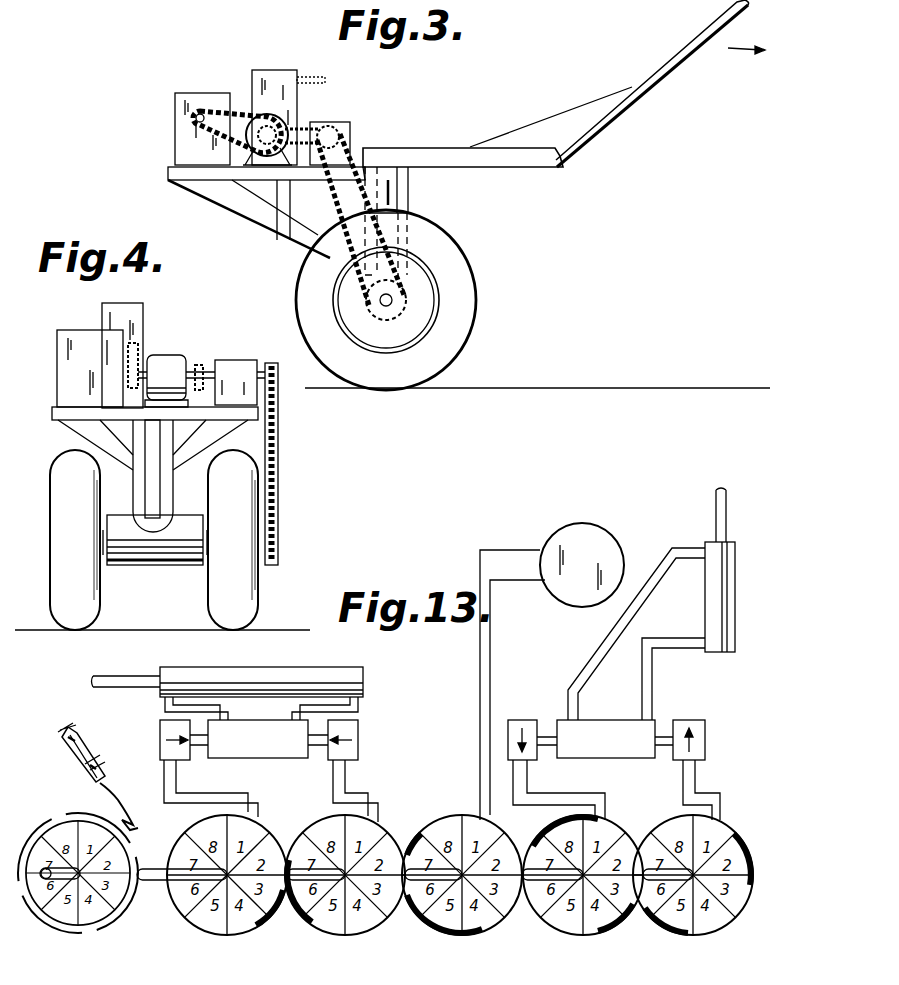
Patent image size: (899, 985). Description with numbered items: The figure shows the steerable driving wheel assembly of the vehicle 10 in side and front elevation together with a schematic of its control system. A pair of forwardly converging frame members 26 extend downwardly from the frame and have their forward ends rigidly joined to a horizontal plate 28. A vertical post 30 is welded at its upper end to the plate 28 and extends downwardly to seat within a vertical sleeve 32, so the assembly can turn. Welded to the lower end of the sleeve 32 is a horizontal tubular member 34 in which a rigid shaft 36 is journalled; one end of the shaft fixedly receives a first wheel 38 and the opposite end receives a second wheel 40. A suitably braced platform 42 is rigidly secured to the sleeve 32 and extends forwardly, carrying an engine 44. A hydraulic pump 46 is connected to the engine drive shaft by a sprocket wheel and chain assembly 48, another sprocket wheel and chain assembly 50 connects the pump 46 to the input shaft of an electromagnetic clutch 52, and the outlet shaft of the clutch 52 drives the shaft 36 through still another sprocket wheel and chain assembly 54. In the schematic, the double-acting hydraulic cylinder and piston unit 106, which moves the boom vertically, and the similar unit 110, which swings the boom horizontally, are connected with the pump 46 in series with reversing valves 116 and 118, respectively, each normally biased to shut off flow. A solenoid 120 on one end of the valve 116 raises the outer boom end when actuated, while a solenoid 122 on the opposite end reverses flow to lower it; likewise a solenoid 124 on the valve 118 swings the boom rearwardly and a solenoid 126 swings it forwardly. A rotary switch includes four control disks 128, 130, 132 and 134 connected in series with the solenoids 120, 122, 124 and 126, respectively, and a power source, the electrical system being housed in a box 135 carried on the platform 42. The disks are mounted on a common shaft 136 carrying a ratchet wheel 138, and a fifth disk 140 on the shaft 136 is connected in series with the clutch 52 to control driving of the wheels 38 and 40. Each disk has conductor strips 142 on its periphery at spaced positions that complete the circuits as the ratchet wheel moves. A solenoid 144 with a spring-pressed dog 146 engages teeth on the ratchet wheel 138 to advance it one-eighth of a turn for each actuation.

In FIG. 3, the transplanter machine 10 is at (652, 103).
In FIG. 4, the transplanter machine 10 is at (288, 437).
In FIG. 3, the frame members 26 is at (673, 50).
In FIG. 3, the horizontal plate 28 is at (460, 157).
In FIG. 3, the vertical post 30 is at (395, 205).
In FIG. 3, the vertical sleeve 32 is at (410, 193).
In FIG. 4, the vertical sleeve 32 is at (137, 475).
In FIG. 4, the horizontal tubular member 34 is at (140, 568).
In FIG. 3, the shaft 36 is at (382, 303).
In FIG. 4, the shaft 36 is at (205, 545).
In FIG. 4, the first wheel 38 is at (82, 616).
In FIG. 3, the second wheel 40 is at (432, 362).
In FIG. 4, the second wheel 40 is at (245, 597).
In FIG. 3, the platform 42 is at (247, 175).
In FIG. 4, the platform 42 is at (80, 415).
In FIG. 3, the engine 44 is at (182, 128).
In FIG. 4, the engine 44 is at (68, 372).
In FIG. 3, the hydraulic pump 46 is at (280, 125).
In FIG. 4, the hydraulic pump 46 is at (168, 358).
In FIG. 3, the sprocket wheel and chain assembly 48 is at (245, 118).
In FIG. 4, the sprocket wheel and chain assembly 48 is at (138, 340).
In FIG. 3, the sprocket wheel and chain assembly 50 is at (300, 132).
In FIG. 4, the sprocket wheel and chain assembly 50 is at (199, 362).
In FIG. 3, the electromagnetic clutch 52 is at (350, 135).
In FIG. 4, the electromagnetic clutch 52 is at (252, 338).
In FIG. 13, the electromagnetic clutch 52 is at (598, 543).
In FIG. 3, the sprocket wheel and chain assembly 54 is at (322, 250).
In FIG. 4, the sprocket wheel and chain assembly 54 is at (279, 470).
In FIG. 13, the double-acting hydraulic cylinder and piston unit 106 is at (738, 590).
In FIG. 13, the double-acting hydraulic cylinder and piston unit 110 is at (268, 668).
In FIG. 13, the reversing valve 116 is at (620, 700).
In FIG. 13, the reversing valve 118 is at (248, 750).
In FIG. 13, the solenoid 120 is at (705, 740).
In FIG. 13, the solenoid 122 is at (548, 700).
In FIG. 13, the solenoid 124 is at (160, 727).
In FIG. 13, the solenoid 126 is at (358, 727).
In FIG. 13, the control disk 128 is at (725, 918).
In FIG. 13, the control disk 130 is at (585, 935).
In FIG. 13, the control disk 132 is at (195, 915).
In FIG. 13, the control disk 134 is at (343, 933).
In FIG. 3, the box 135 is at (265, 78).
In FIG. 4, the box 135 is at (118, 305).
In FIG. 13, the common shaft 136 is at (410, 912).
In FIG. 13, the ratchet wheel 138 is at (55, 925).
In FIG. 13, the fifth disk 140 is at (464, 936).
In FIG. 13, the conductor strips 142 is at (748, 848).
In FIG. 13, the solenoid 144 is at (80, 760).
In FIG. 13, the spring-pressed dog 146 is at (132, 815).